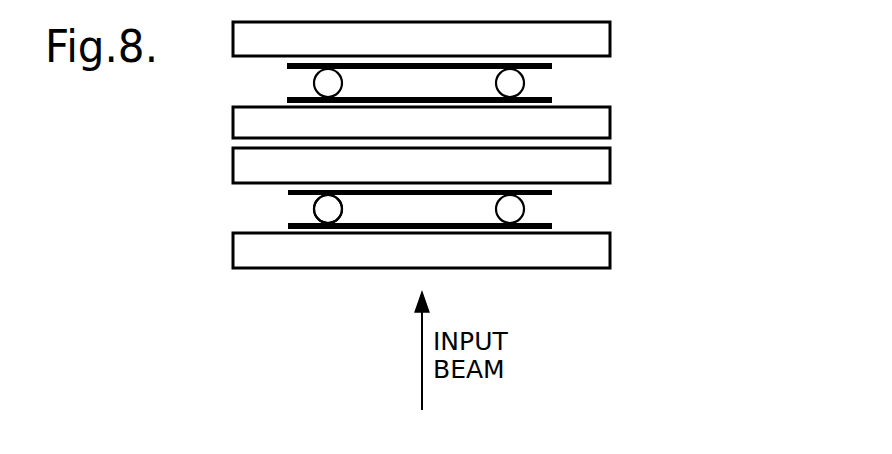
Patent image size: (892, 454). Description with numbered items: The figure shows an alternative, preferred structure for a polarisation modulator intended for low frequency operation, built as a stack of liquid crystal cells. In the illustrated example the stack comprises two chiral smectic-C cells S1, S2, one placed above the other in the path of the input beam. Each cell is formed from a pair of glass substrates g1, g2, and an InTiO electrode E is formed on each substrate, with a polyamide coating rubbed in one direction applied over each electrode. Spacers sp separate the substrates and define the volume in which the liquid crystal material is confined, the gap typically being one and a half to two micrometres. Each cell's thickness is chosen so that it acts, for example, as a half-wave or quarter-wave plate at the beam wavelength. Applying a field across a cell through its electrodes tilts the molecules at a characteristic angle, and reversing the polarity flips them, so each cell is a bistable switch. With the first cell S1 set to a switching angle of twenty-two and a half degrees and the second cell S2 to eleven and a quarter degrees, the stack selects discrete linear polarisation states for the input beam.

The second chiral smectic-C cell S2 is at (620, 20).
The first chiral smectic-C cell S1 is at (620, 150).
The glass substrate g1 is at (233, 160).
The glass substrate g2 is at (233, 255).
The InTiO electrode E is at (553, 63).
The spacer sp is at (329, 218).